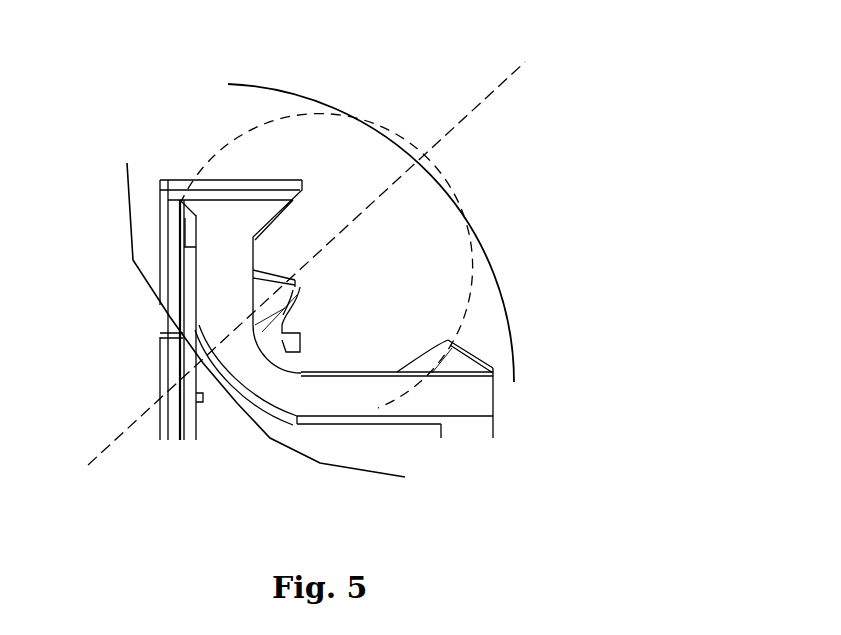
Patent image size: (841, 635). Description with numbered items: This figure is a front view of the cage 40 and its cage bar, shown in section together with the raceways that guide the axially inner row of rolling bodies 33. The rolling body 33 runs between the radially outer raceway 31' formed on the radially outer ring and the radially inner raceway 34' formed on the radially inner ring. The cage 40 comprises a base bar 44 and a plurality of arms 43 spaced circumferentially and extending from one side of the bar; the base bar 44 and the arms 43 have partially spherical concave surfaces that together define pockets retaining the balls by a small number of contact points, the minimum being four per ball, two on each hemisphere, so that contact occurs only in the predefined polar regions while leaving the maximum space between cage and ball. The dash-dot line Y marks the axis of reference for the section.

The radially outer raceway 31' is at (371, 202).
The axially inner row of rolling bodies 33 is at (223, 130).
The radially inner raceway 34' is at (266, 360).
The cage 40 is at (418, 310).
The arm 43 is at (277, 280).
The base bar 44 is at (435, 400).
The axis Y is at (306, 250).